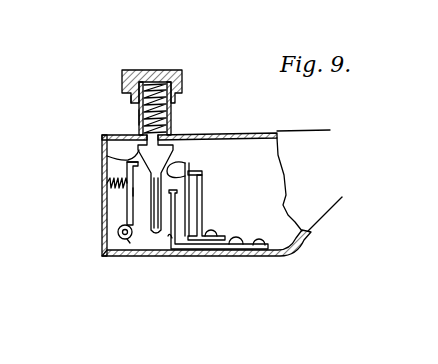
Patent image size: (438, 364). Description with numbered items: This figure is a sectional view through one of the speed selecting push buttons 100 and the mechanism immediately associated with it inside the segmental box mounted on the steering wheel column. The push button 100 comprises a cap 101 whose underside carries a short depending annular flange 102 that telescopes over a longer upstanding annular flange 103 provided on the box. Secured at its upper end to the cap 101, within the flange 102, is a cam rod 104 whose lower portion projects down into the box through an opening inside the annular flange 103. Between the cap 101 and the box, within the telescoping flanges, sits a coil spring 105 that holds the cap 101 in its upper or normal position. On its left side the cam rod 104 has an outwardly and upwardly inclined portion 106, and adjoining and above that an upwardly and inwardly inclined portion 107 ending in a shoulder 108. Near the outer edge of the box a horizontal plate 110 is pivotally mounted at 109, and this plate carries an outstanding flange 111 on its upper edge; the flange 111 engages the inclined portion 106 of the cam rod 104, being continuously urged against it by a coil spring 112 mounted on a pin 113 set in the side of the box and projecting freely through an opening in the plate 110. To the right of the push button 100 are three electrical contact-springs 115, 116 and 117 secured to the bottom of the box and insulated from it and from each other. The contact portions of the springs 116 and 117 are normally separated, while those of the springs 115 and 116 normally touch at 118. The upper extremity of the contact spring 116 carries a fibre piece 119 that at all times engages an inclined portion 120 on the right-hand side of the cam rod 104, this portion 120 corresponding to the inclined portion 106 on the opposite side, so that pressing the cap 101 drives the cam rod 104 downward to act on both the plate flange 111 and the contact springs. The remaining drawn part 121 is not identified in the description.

The push button 100 is at (172, 61).
The cap 101 is at (182, 79).
The depending annular flange 102 is at (166, 110).
The upstanding annular flange 103 is at (171, 125).
The cam rod 104 is at (139, 103).
The coil spring 105 is at (141, 118).
The outwardly and upwardly inclined portion 106 is at (132, 208).
The upwardly and inwardly inclined portion 107 is at (107, 156).
The shoulder 108 is at (102, 148).
The pivot 109 is at (124, 260).
The horizontal plate 110 is at (118, 232).
The outstanding flange 111 is at (127, 163).
The coil spring 112 is at (133, 192).
The pin 113 is at (113, 186).
The contact-spring 115 is at (172, 257).
The contact-spring 116 is at (241, 232).
The contact-spring 117 is at (202, 212).
The contact point 118 is at (178, 196).
The fibre piece 119 is at (189, 163).
The inclined portion 120 is at (173, 155).
The insulator 121 is at (192, 173).